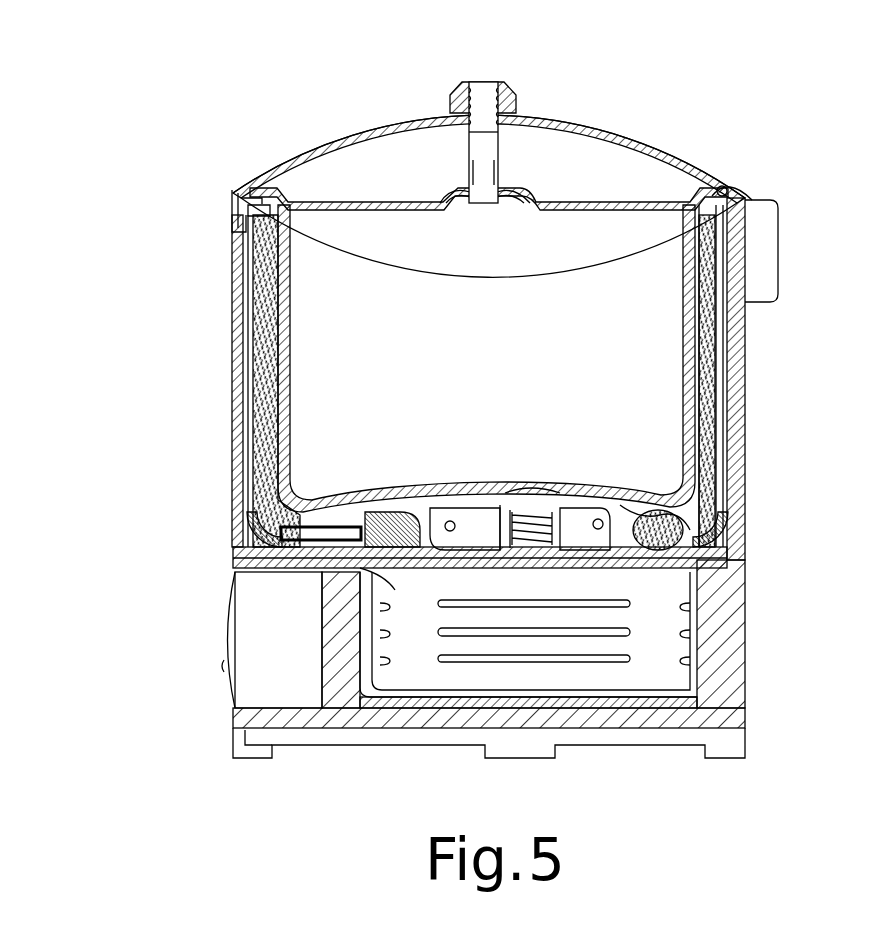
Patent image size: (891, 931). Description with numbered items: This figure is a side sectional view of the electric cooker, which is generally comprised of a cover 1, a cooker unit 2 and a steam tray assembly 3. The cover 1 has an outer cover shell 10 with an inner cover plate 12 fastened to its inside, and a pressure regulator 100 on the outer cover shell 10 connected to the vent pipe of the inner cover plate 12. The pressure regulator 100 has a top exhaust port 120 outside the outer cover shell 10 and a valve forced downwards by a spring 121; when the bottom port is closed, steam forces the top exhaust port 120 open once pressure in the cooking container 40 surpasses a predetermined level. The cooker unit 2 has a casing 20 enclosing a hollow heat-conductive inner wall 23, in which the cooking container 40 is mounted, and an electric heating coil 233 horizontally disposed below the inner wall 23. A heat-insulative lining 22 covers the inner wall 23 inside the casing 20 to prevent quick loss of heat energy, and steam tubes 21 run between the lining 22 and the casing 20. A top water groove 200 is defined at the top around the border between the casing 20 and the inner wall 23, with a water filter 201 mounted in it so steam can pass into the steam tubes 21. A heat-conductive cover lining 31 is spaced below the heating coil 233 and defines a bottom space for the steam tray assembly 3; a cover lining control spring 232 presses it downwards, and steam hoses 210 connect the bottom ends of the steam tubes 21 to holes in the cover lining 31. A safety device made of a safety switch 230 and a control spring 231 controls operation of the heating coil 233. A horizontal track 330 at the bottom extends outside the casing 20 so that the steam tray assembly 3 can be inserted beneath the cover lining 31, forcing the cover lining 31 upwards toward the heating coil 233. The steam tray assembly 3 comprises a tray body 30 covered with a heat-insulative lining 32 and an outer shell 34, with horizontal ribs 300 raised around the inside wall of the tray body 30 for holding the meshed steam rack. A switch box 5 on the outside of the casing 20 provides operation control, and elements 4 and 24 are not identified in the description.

The cover 1 is at (680, 88).
The cooker unit 2 is at (785, 398).
The steam tray assembly 3 is at (758, 690).
The inner pot 4 is at (650, 338).
The switch box 5 is at (247, 630).
The outer cover shell 10 is at (268, 158).
The inner cover plate 12 is at (385, 200).
The casing 20 is at (232, 384).
The steam tubes 21 is at (722, 406).
The heat-insulative lining 22 is at (745, 473).
The hollow heat-conductive inner wall 23 is at (262, 328).
The handle 24 is at (760, 257).
The tray body 30 is at (700, 632).
The heat-conductive cover lining 31 is at (610, 503).
The heat-insulative lining 32 is at (690, 598).
The outer shell 34 is at (705, 697).
The cooking container 40 is at (712, 350).
The pressure regulator 100 is at (455, 92).
The top exhaust port 120 is at (492, 80).
The spring 121 is at (498, 108).
The top water groove 200 is at (247, 203).
The water filter 201 is at (250, 227).
The steam hoses 210 is at (745, 524).
The safety switch 230 is at (528, 506).
The control spring 231 is at (565, 560).
The cover lining control spring 232 is at (525, 530).
The electric heating coil 233 is at (446, 504).
The horizontal ribs 300 is at (396, 585).
The horizontal track 330 is at (482, 708).